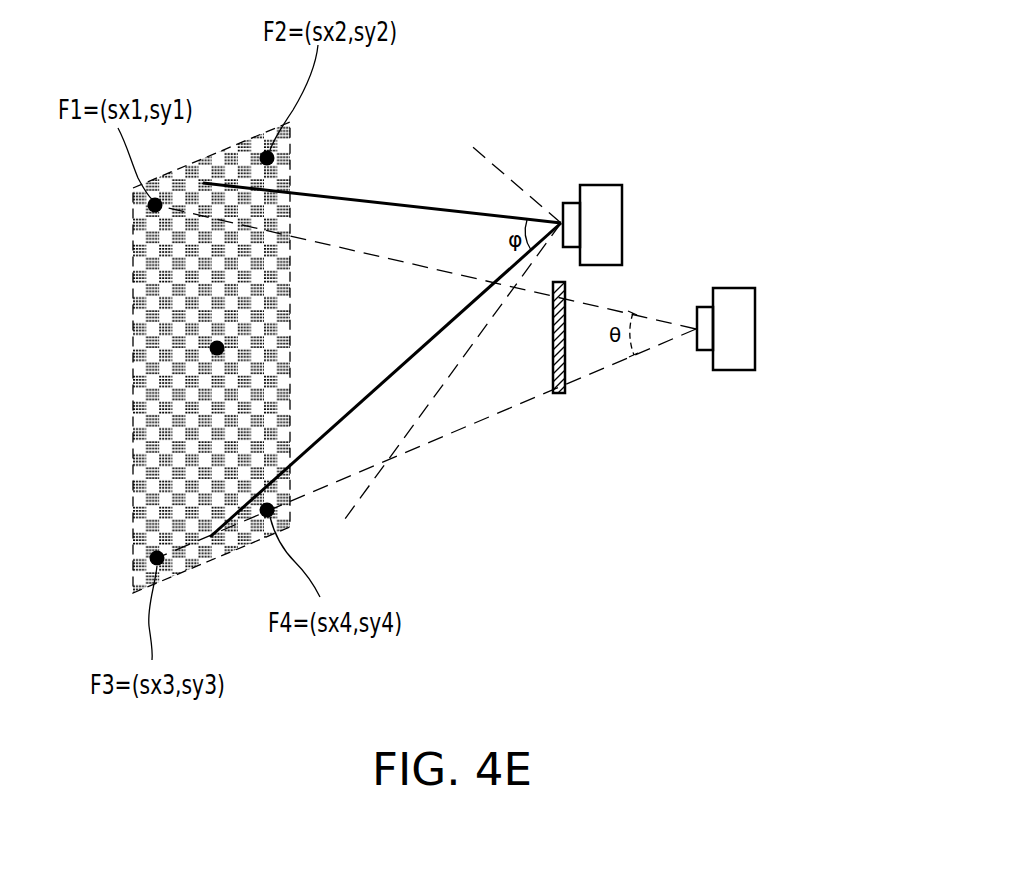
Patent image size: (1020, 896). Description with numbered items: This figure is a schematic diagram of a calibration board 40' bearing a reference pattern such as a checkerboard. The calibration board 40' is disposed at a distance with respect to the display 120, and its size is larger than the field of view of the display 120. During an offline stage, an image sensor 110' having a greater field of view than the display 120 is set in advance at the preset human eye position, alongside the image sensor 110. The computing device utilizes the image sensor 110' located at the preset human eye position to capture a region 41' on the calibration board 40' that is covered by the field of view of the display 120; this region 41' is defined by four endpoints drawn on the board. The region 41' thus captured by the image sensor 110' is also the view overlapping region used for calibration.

The calibration board 40' is at (211, 330).
The region covered by the FOV of the display 41' is at (174, 357).
The image sensor 110 is at (643, 225).
The image sensor located at the preset human eye position 110' is at (781, 329).
The display 120 is at (565, 352).